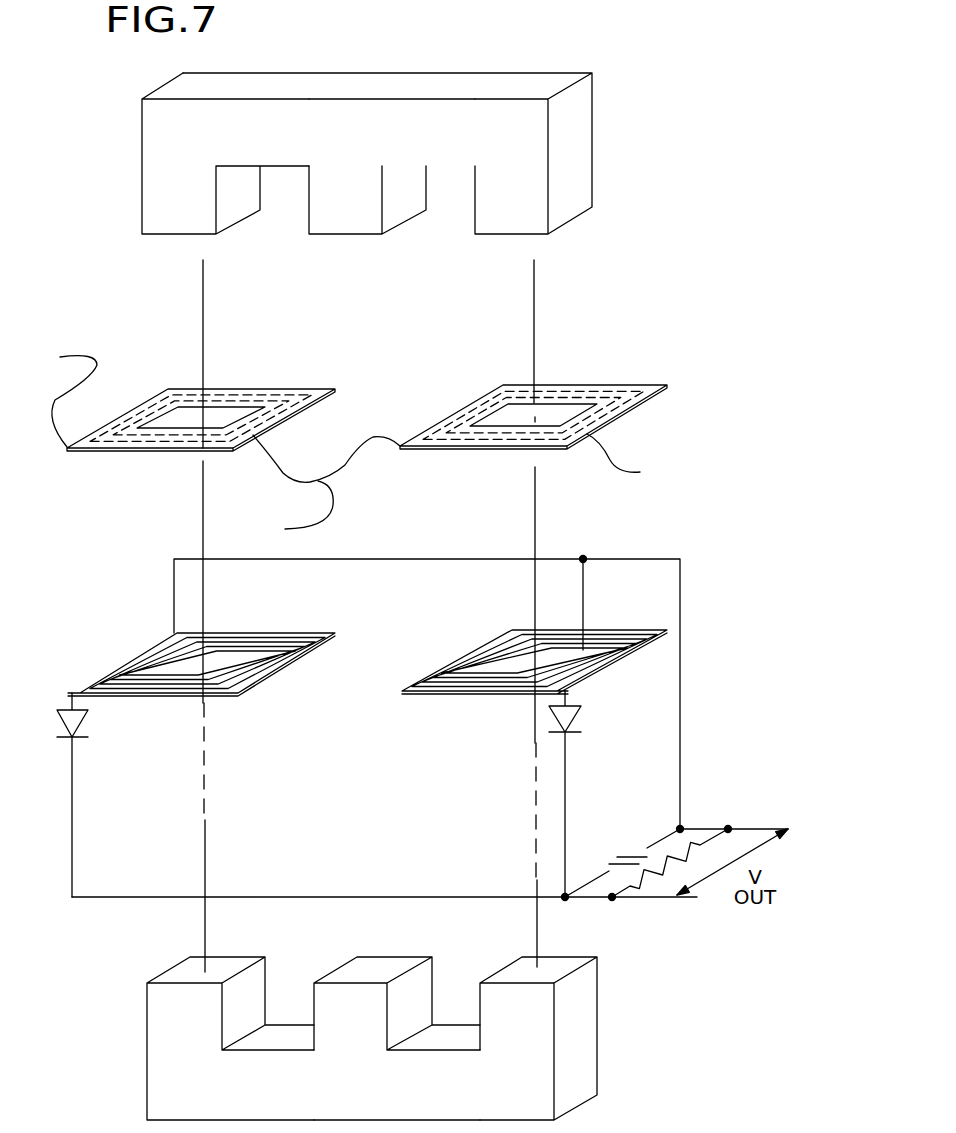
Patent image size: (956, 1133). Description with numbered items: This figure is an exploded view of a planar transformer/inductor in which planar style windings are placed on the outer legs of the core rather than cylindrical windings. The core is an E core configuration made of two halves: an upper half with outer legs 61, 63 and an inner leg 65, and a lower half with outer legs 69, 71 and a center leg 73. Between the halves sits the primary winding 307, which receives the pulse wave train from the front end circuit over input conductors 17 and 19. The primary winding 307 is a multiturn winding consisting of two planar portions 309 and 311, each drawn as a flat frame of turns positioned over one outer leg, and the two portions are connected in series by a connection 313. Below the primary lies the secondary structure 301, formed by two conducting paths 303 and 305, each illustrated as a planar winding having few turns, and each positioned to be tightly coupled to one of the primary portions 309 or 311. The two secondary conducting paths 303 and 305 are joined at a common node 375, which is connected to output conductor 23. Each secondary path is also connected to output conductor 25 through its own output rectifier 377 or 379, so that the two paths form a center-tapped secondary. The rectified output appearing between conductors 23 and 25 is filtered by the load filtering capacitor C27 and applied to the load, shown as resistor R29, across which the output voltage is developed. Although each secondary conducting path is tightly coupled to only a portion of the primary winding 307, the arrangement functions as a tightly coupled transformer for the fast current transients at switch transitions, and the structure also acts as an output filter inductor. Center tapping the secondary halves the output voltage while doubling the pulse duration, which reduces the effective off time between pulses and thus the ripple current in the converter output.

The outer leg 61 is at (186, 201).
The inner leg 65 is at (362, 201).
The outer leg 63 is at (516, 201).
The output conductor 17 is at (63, 396).
The output conductor 19 is at (628, 459).
The primary winding 307 is at (351, 418).
The planar portion 309 is at (242, 380).
The planar portion 311 is at (605, 372).
The connection 313 is at (316, 487).
The common node 375 is at (668, 566).
The secondary structure 301 is at (359, 728).
The conducting path 303 is at (173, 694).
The conducting path 305 is at (485, 692).
The output rectifier 377 is at (60, 708).
The output rectifier 379 is at (573, 713).
The output conductor 23 is at (707, 829).
The output conductor 25 is at (590, 899).
The load filtering capacitor C27 is at (622, 857).
The load R29 is at (651, 875).
The outer leg 69 is at (193, 1032).
The center leg 73 is at (368, 1032).
The outer leg 71 is at (521, 1032).